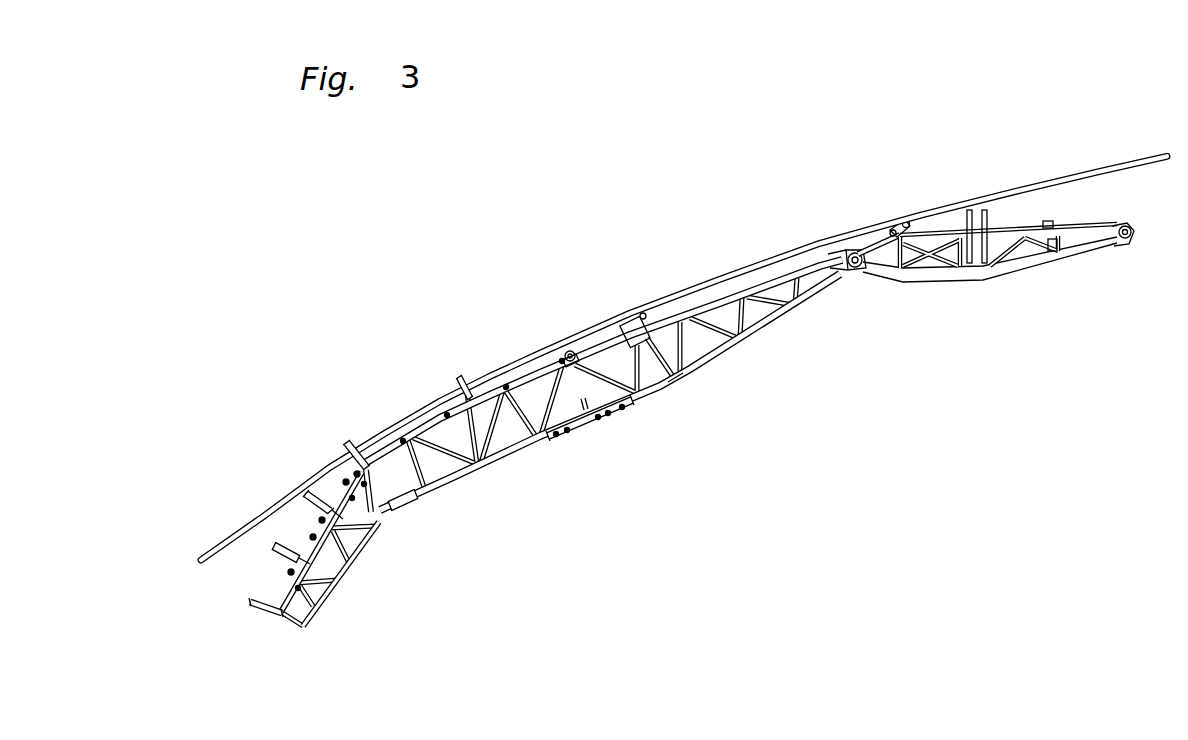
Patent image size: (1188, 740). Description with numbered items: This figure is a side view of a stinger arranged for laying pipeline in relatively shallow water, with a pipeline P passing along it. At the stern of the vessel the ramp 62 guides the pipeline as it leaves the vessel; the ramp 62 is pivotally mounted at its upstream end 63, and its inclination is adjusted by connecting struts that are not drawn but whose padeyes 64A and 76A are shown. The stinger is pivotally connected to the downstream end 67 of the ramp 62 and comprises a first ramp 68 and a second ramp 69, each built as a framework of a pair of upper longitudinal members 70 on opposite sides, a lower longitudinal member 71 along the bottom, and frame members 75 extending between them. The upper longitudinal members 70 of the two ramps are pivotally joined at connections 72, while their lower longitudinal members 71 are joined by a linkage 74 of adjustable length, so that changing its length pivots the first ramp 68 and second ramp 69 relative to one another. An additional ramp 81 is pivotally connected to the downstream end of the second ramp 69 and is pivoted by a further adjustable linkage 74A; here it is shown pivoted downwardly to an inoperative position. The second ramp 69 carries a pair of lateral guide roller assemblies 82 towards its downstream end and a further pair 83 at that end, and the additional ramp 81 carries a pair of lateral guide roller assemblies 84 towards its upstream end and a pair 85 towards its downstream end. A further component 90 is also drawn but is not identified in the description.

The pipeline P is at (825, 236).
The ramp 62 is at (1020, 263).
The upstream end 63 is at (1129, 242).
The padeye 64A is at (909, 214).
The downstream end 67 is at (859, 268).
The first ramp 68 is at (744, 362).
The second ramp 69 is at (493, 478).
The upper longitudinal members 70 is at (440, 423).
The lower longitudinal member 71 is at (454, 480).
The connections 72 is at (568, 350).
The linkage 74 is at (598, 425).
The linkage 74A is at (398, 513).
The frame members 75 is at (712, 317).
The padeye 76A is at (643, 309).
The additional ramp 81 is at (348, 592).
The lateral guide roller assemblies 82 is at (461, 375).
The lateral guide roller assemblies 83 is at (353, 440).
The lateral guide roller assemblies 84 is at (306, 493).
The lateral guide roller assemblies 85 is at (272, 547).
The mounting bracket 90 is at (252, 603).